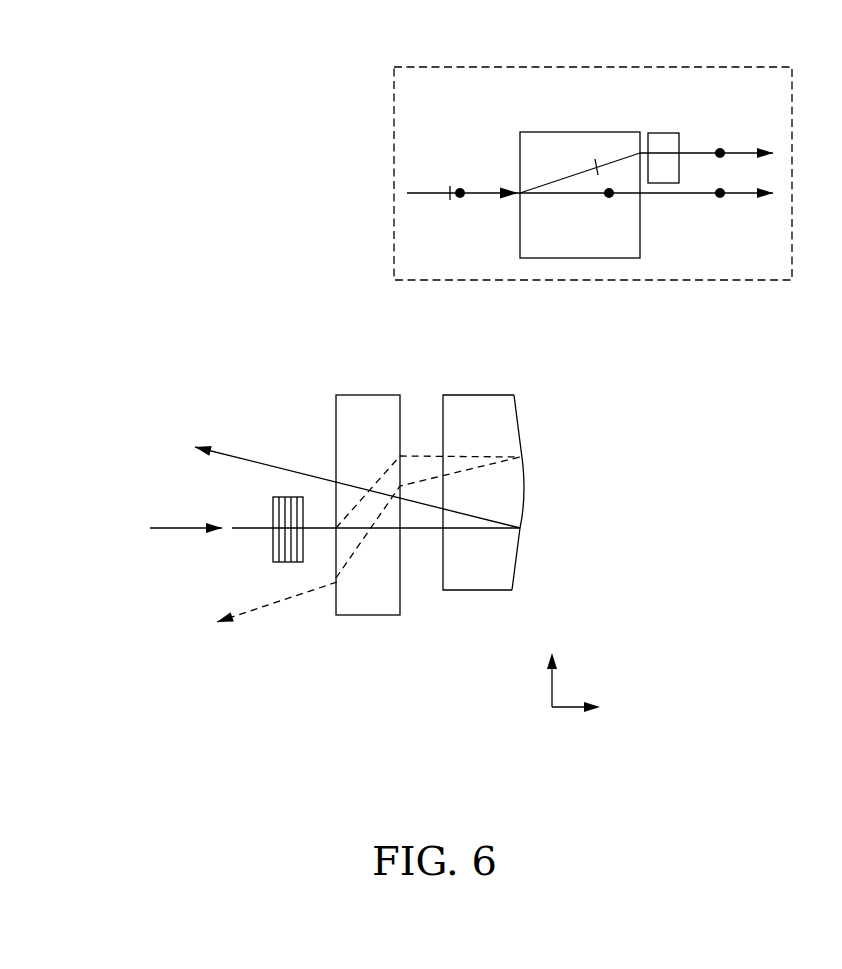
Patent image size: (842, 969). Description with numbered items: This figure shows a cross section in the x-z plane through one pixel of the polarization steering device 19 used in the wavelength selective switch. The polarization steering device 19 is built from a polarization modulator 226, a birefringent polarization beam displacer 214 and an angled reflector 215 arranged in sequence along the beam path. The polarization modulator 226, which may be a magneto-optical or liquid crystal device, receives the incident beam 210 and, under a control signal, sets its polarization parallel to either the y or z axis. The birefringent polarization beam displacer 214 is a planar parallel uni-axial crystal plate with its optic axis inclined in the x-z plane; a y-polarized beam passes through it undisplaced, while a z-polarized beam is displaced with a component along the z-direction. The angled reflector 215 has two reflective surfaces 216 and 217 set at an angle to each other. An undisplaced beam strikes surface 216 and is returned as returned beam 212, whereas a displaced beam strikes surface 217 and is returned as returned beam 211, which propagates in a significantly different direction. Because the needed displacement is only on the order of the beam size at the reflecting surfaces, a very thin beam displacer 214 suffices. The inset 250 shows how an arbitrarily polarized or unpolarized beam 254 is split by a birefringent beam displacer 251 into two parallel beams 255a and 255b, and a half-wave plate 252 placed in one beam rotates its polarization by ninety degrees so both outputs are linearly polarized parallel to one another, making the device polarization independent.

The inset 250 is at (393, 67).
The birefringent beam displacer 251 is at (532, 132).
The half-wave plate 252 is at (651, 133).
The beam 254 is at (482, 192).
The parallel beam 255a is at (743, 152).
The parallel beam 255b is at (738, 195).
The polarization steering device 19 is at (200, 321).
The incident beam 210 is at (175, 528).
The returned beam 211 is at (245, 612).
The returned beam 212 is at (230, 453).
The birefringent polarization beam displacer 214 is at (367, 615).
The angled reflector 215 is at (518, 522).
The reflective surface 216 is at (519, 550).
The reflective surface 217 is at (518, 430).
The polarization modulator 226 is at (273, 522).